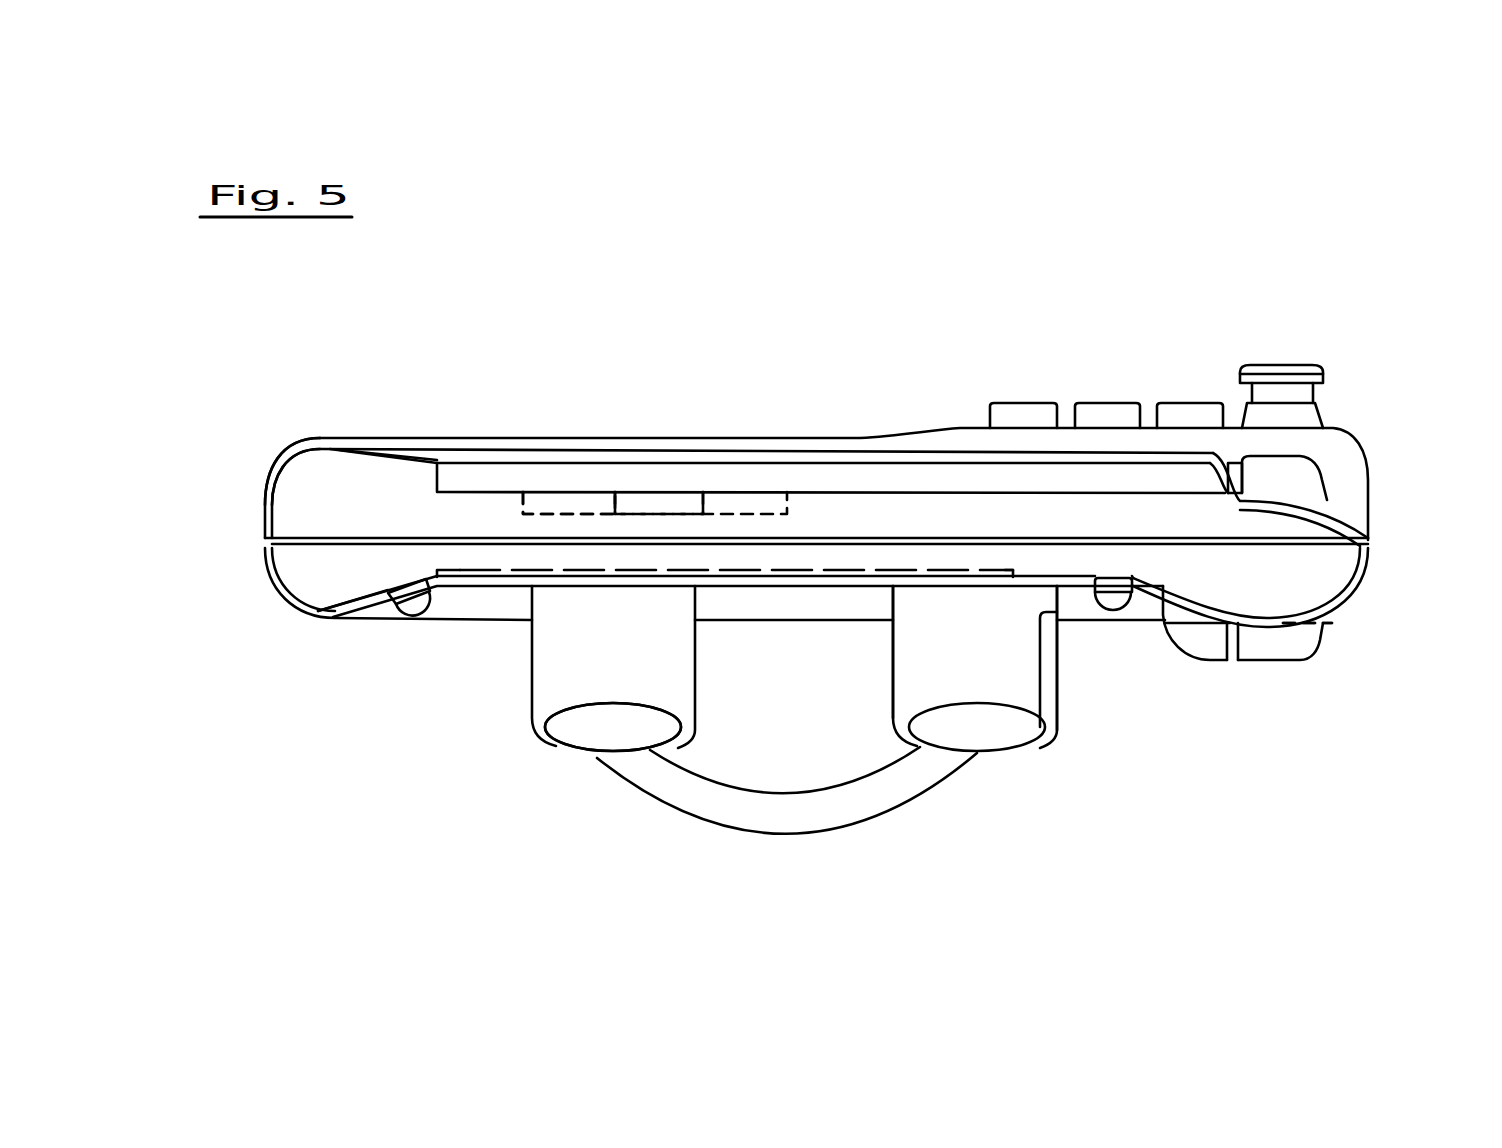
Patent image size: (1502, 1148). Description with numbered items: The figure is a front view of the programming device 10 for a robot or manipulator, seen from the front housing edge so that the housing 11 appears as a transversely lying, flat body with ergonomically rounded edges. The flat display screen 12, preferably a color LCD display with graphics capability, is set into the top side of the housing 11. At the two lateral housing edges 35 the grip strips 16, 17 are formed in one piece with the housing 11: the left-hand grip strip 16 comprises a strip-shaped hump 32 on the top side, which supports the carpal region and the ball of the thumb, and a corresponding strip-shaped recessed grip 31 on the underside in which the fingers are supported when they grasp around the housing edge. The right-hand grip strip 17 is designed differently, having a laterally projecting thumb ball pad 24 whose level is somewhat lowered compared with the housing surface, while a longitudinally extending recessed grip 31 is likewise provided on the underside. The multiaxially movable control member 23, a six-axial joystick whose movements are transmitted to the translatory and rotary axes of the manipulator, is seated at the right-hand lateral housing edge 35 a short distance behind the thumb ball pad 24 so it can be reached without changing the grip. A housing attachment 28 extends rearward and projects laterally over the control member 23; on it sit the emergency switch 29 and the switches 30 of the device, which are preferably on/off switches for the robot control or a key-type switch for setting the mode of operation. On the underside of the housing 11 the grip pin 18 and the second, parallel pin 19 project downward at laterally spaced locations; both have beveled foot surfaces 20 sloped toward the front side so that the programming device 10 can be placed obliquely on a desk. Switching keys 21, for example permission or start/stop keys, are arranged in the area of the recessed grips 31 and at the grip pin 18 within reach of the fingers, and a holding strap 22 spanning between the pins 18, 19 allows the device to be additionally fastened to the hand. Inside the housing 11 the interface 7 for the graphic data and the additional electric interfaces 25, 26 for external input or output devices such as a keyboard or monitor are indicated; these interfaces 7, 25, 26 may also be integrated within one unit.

The interface 7 is at (737, 500).
The programming device 10 is at (898, 403).
The housing 11 is at (760, 437).
The display screen 12 is at (450, 477).
The grip strip 16 is at (305, 470).
The grip strip 17 is at (1282, 572).
The grip pin 18 is at (952, 641).
The pin 19 is at (627, 641).
The beveled foot surface 20 is at (605, 731).
The switching key 21 is at (460, 573).
The holding strap 22 is at (800, 822).
The control member 23 is at (1280, 637).
The thumb ball pad 24 is at (1390, 685).
The electric interface 25 is at (565, 500).
The electric interface 26 is at (665, 500).
The housing attachment 28 is at (965, 425).
The emergency switch 29 is at (1287, 388).
The switch 30 is at (1097, 410).
The recessed grip 31 is at (388, 607).
The hump 32 is at (305, 470).
The lateral housing edge 35 is at (265, 512).